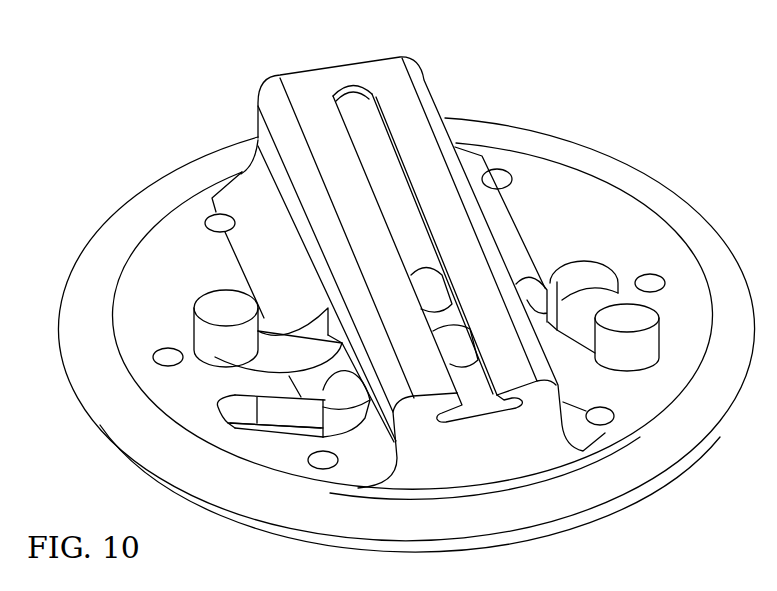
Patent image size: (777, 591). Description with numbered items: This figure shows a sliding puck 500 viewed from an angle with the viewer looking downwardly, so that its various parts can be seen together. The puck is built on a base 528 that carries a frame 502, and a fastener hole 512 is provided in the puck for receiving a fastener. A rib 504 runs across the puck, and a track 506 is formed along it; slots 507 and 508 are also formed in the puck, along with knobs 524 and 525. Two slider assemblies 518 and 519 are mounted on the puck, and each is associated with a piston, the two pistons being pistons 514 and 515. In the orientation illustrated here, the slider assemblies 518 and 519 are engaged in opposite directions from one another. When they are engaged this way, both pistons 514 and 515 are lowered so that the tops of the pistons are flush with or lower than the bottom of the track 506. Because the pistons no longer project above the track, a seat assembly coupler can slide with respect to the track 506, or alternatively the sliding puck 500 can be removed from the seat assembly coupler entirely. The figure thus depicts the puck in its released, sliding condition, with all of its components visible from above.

The sliding puck 500 is at (642, 88).
The frame 502 is at (535, 155).
The rib 504 is at (378, 67).
The track 506 is at (355, 104).
The slot 507 is at (230, 408).
The slot 508 is at (578, 277).
The fastener hole 512 is at (160, 345).
The piston 514 is at (458, 345).
The piston 515 is at (432, 280).
The slider assembly 518 is at (590, 382).
The slider assembly 519 is at (277, 346).
The knob 524 is at (630, 312).
The knob 525 is at (313, 418).
The base 528 is at (670, 184).